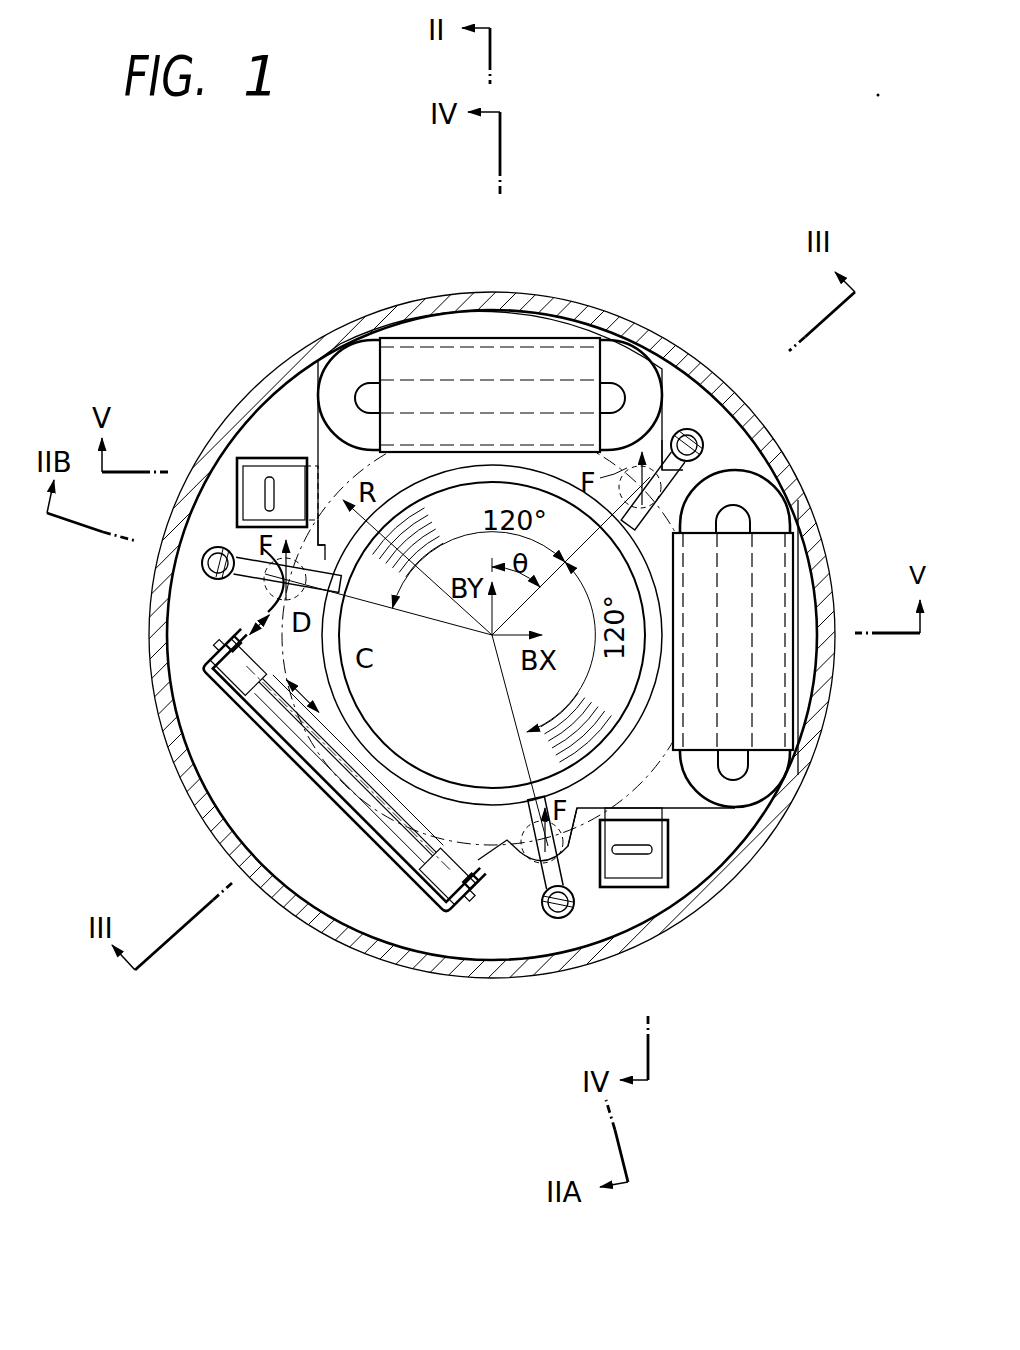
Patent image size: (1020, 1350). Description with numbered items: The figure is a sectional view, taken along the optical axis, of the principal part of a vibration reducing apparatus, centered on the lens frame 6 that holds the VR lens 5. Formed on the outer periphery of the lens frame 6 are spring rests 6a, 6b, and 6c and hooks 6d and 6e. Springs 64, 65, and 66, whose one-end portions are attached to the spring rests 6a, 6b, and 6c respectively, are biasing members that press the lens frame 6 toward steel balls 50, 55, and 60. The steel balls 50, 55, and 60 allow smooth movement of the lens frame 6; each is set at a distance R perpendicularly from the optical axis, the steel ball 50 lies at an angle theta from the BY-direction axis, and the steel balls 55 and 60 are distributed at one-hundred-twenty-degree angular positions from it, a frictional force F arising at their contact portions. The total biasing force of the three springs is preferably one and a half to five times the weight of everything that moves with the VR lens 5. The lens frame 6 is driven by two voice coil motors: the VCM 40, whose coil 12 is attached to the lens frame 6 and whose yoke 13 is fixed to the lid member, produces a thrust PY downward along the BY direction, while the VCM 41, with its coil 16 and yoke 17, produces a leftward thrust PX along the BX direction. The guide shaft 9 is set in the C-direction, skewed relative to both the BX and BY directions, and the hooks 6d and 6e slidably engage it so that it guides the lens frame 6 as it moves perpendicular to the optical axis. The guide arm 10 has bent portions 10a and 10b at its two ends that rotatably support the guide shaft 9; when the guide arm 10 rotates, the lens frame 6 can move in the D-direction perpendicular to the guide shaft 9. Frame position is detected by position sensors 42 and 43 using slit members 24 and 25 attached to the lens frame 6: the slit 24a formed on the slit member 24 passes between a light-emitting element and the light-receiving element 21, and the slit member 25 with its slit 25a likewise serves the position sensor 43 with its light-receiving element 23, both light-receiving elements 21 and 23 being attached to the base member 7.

The VR lens 5 is at (457, 497).
The lens frame 6 is at (347, 465).
The spring rest 6a is at (655, 468).
The spring rest 6b is at (283, 543).
The spring rest 6c is at (575, 865).
The hook 6d is at (250, 697).
The hook 6e is at (438, 862).
The base member 7 is at (702, 372).
The guide shaft 9 is at (336, 782).
The guide arm 10 is at (278, 829).
The bent portion 10a is at (204, 666).
The bent portion 10b is at (466, 910).
The coil 12 is at (620, 365).
The yoke 13 is at (548, 355).
The coil 16 is at (763, 498).
The yoke 17 is at (773, 567).
The light-receiving element (PSD) 21 is at (670, 878).
The light-receiving element (PSD) 23 is at (250, 410).
The slit member 24 is at (726, 884).
The slit 24a is at (637, 858).
The slit member 25 is at (292, 470).
The sensor slit 25a is at (262, 490).
The VCM 40 is at (490, 347).
The VCM 41 is at (800, 637).
The position sensor 42 is at (672, 851).
The position sensor 43 is at (232, 492).
The steel ball 50 is at (778, 607).
The steel ball 55 is at (272, 600).
The steel ball 60 is at (528, 862).
The spring 64 is at (700, 437).
The spring 65 is at (209, 580).
The spring 66 is at (567, 912).